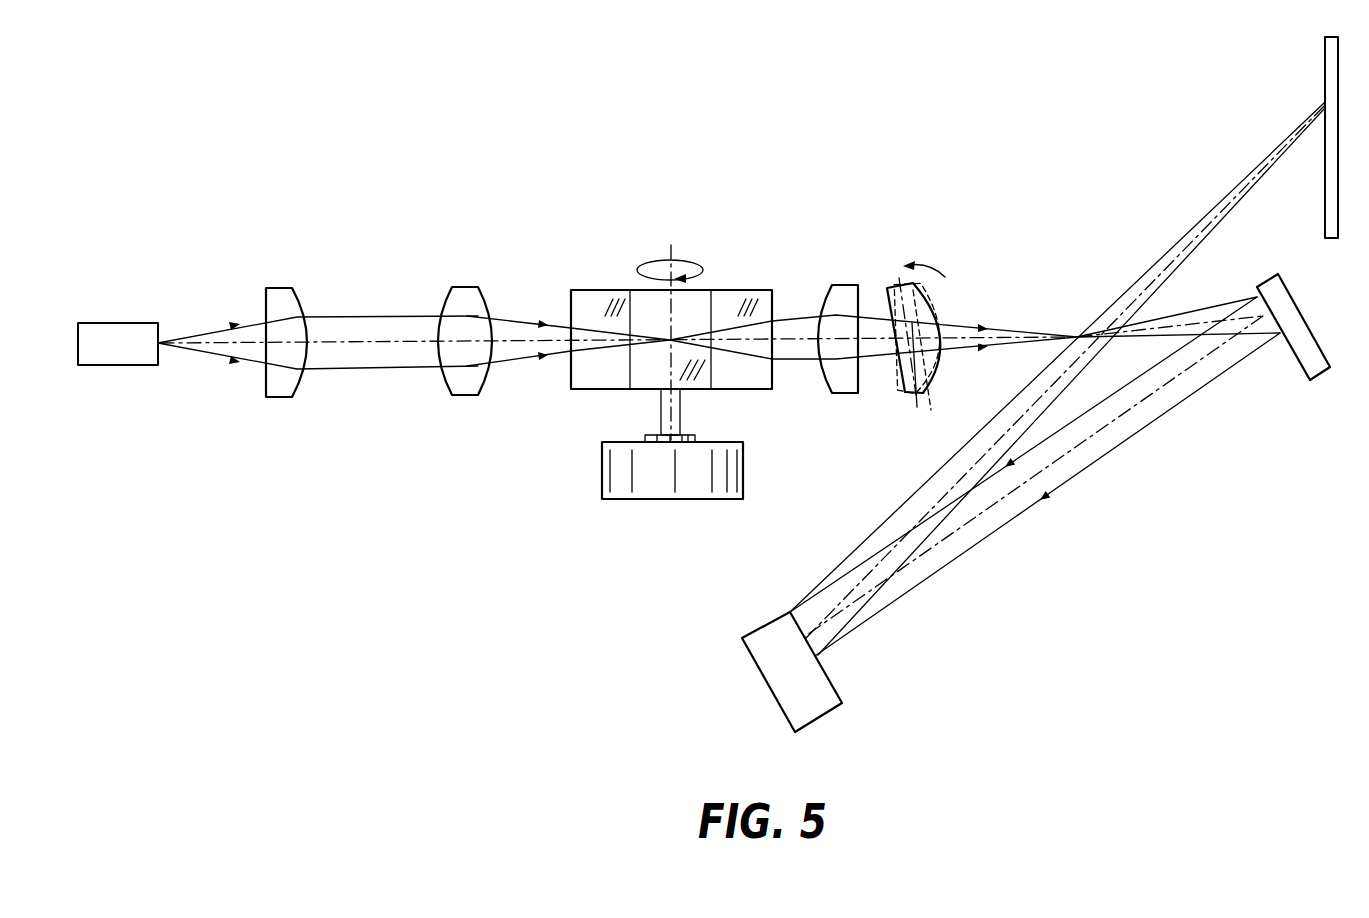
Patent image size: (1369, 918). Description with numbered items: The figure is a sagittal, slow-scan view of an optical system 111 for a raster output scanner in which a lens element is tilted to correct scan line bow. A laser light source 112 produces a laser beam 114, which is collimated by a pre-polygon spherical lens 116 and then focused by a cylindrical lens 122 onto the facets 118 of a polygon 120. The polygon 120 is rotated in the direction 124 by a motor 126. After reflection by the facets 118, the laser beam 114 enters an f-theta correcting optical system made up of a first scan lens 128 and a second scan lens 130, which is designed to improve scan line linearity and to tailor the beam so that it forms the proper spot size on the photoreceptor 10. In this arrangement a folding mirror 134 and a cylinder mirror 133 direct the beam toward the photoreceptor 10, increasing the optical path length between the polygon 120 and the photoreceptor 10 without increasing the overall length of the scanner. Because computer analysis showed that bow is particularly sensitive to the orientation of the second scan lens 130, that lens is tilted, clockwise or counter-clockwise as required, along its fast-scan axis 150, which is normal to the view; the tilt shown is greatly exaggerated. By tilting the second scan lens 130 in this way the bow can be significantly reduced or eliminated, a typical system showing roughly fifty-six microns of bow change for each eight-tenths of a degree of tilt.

The photoreceptor 10 is at (1325, 57).
The optical system 111 is at (770, 168).
The laser light source 112 is at (128, 323).
The laser beam 114 is at (217, 330).
The pre-polygon spherical lens 116 is at (278, 288).
The facets 118 is at (698, 295).
The polygon 120 is at (606, 391).
The cylindrical lens 122 is at (461, 288).
The direction of rotation 124 is at (660, 264).
The motor 126 is at (648, 501).
The first scan lens 128 is at (843, 287).
The second scan lens 130 is at (895, 285).
The cylinder mirror 133 is at (764, 681).
The folding mirror 134 is at (1327, 386).
The fast-scan axis 150 is at (921, 410).